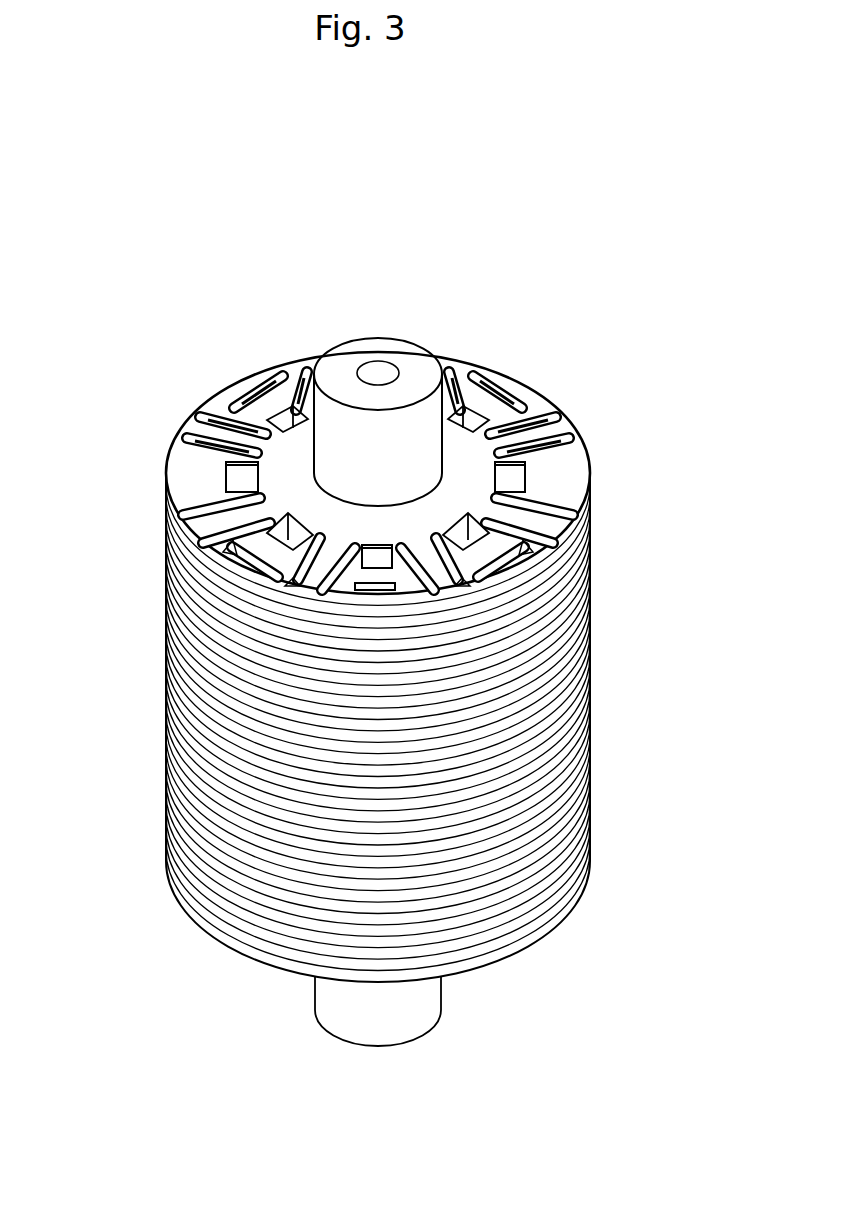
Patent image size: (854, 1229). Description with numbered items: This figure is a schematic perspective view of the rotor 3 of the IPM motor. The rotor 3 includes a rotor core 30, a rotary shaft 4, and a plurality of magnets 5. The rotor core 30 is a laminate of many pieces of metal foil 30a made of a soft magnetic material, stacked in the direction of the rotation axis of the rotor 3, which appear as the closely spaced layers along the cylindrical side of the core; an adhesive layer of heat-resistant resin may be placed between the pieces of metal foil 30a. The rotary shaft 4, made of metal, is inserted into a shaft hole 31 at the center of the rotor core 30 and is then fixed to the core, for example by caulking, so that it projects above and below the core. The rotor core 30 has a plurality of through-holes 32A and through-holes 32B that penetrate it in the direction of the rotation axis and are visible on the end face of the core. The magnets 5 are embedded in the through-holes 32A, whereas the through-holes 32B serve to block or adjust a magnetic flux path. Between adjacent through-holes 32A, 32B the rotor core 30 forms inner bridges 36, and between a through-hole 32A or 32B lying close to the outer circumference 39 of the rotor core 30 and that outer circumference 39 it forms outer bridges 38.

The rotor 3 is at (663, 239).
The rotary shaft 4 is at (387, 347).
The magnet 5 is at (292, 378).
The rotor core 30 is at (573, 645).
The metal foil 30a is at (198, 538).
The shaft hole 31 is at (428, 488).
The through-hole 32A is at (240, 400).
The through-hole 32B is at (232, 472).
The inner bridge 36 is at (480, 587).
The outer bridge 38 is at (297, 589).
The outer circumference 39 is at (585, 708).